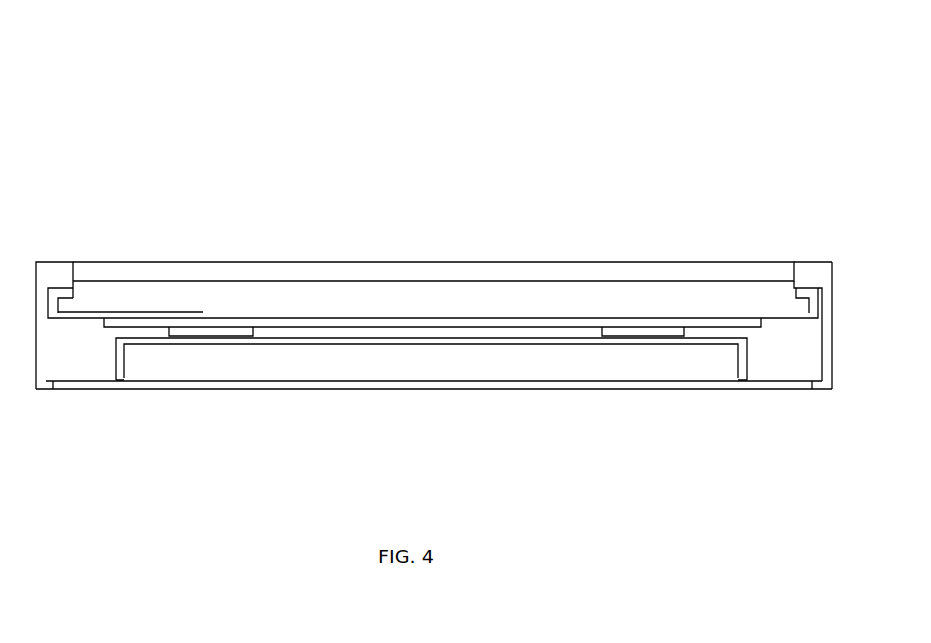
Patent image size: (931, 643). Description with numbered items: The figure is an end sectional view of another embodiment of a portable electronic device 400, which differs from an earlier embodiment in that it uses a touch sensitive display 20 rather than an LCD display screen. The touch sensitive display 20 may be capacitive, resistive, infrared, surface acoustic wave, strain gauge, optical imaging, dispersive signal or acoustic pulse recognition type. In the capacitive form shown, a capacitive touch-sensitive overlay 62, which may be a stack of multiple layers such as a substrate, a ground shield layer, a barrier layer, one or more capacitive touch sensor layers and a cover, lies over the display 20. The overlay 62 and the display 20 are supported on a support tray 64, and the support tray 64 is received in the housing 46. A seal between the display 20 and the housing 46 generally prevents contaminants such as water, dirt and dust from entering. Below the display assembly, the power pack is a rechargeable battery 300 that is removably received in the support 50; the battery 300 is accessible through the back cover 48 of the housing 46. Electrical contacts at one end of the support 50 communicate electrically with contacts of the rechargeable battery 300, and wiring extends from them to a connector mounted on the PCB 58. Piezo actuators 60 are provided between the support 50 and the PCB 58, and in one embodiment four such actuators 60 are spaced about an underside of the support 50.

The portable electronic device 400 is at (260, 119).
The housing 46 is at (49, 274).
The capacitive touch-sensitive overlay 62 is at (492, 273).
The support tray 64 is at (236, 317).
The touch sensitive display 20 is at (597, 298).
The PCB 58 is at (435, 324).
The piezo actuators 60 is at (622, 335).
The support 50 is at (115, 369).
The rechargeable battery 300 is at (272, 359).
The back cover 48 is at (683, 389).